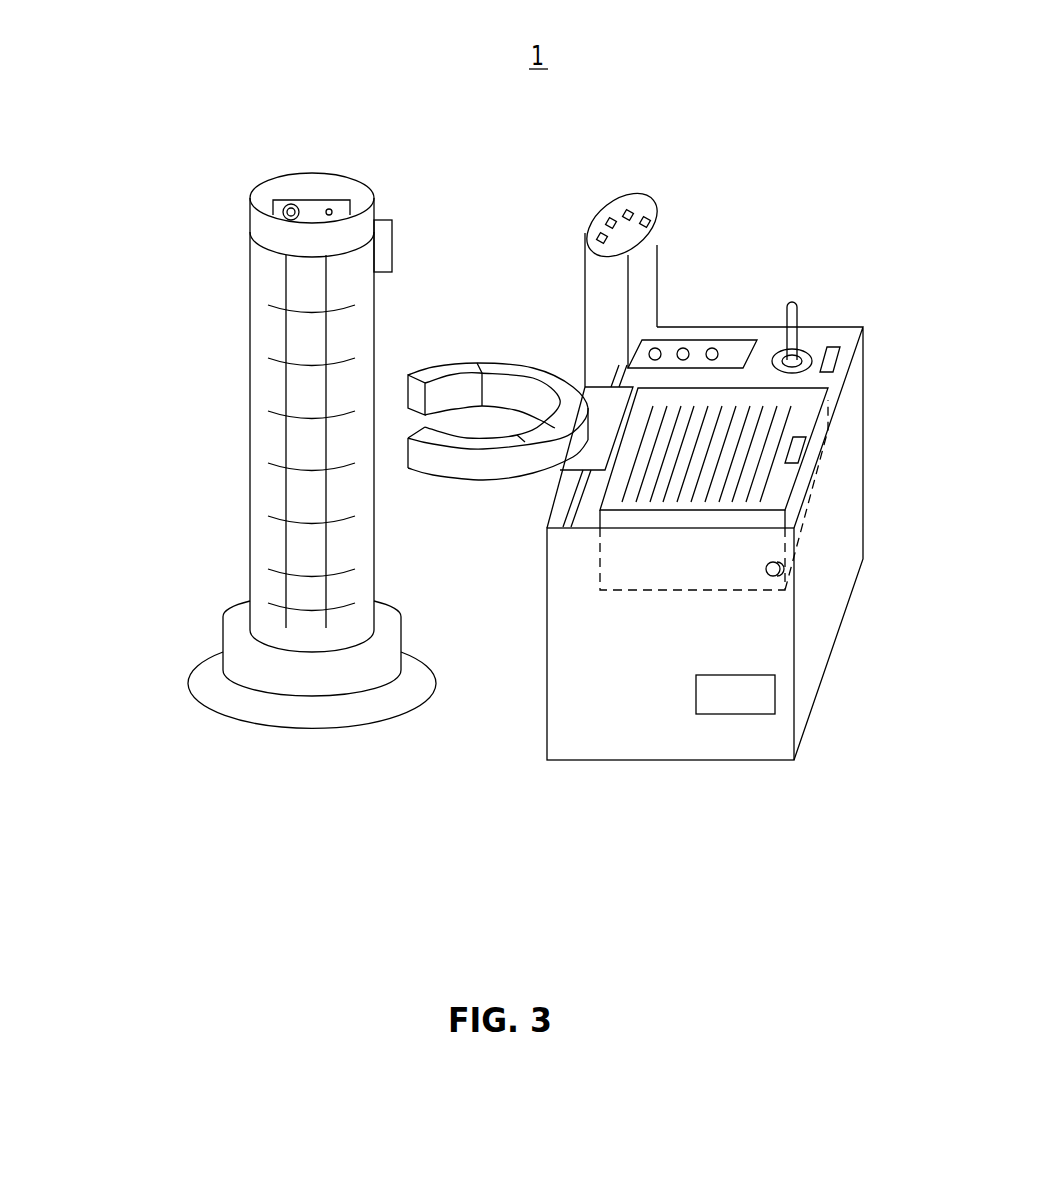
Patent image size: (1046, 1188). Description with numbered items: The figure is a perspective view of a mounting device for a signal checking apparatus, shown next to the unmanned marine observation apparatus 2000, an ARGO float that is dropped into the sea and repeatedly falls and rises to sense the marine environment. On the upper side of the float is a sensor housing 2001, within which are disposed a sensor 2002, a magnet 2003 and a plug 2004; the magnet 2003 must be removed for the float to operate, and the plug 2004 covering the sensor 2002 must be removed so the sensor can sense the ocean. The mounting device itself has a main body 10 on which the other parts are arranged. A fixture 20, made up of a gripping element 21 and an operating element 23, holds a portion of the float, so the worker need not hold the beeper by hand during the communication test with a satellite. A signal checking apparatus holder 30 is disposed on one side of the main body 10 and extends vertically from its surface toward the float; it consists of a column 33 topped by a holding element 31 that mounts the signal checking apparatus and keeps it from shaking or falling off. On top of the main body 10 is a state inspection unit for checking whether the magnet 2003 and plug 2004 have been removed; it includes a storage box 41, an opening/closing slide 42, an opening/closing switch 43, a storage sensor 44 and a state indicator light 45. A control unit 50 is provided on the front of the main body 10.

The main body 10 is at (665, 767).
The fixture 20 is at (870, 945).
The gripping element 21 is at (474, 505).
The operating element 23 is at (792, 300).
The signal checking apparatus holder 30 is at (532, 212).
The holding element 31 is at (597, 218).
The column 33 is at (597, 297).
The storage box 41 is at (812, 498).
The opening/closing slide 42 is at (775, 447).
The opening/closing switch 43 is at (836, 347).
The storage sensor 44 is at (783, 569).
The state indicator light 45 is at (713, 327).
The control unit 50 is at (765, 697).
The unmanned marine observation apparatus 2000 is at (128, 190).
The sensor housing 2001 is at (278, 393).
The sensor 2002 is at (289, 215).
The magnet 2003 is at (380, 260).
The plug 2004 is at (267, 192).